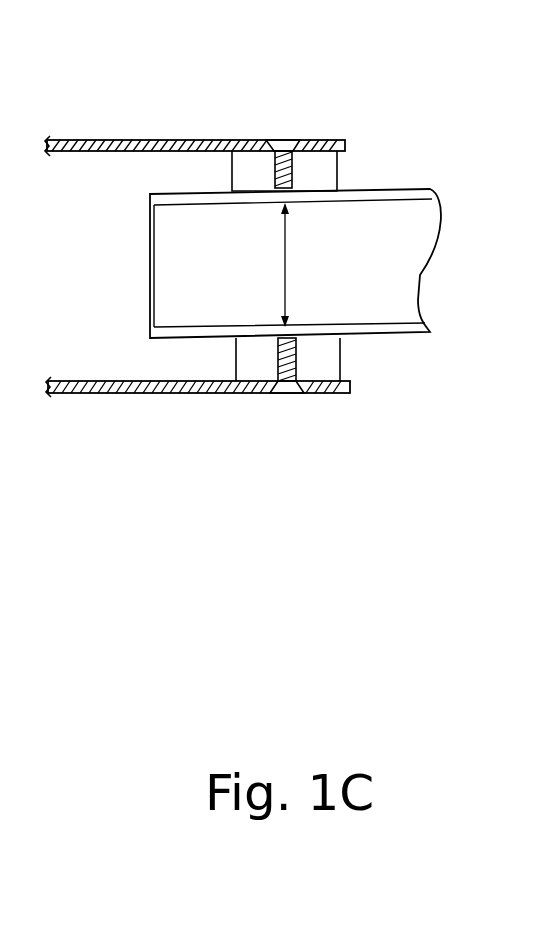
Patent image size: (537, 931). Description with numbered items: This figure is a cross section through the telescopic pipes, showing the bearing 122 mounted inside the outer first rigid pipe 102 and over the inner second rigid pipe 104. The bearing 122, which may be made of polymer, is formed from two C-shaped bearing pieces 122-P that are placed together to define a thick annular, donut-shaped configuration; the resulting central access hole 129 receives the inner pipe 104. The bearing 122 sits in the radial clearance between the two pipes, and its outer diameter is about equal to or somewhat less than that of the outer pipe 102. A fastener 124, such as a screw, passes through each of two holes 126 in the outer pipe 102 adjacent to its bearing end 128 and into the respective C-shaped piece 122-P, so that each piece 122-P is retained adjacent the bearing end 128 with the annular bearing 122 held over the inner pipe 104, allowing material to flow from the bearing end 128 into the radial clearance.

The first rigid pipe 102 is at (209, 397).
The second rigid pipe 104 is at (185, 205).
The bearing 122 is at (337, 163).
The C-shaped bearing piece 122-P is at (255, 167).
The fastener 124 is at (283, 139).
The hole 126 is at (290, 139).
The bearing end 128 is at (346, 141).
The access hole 129 is at (311, 265).